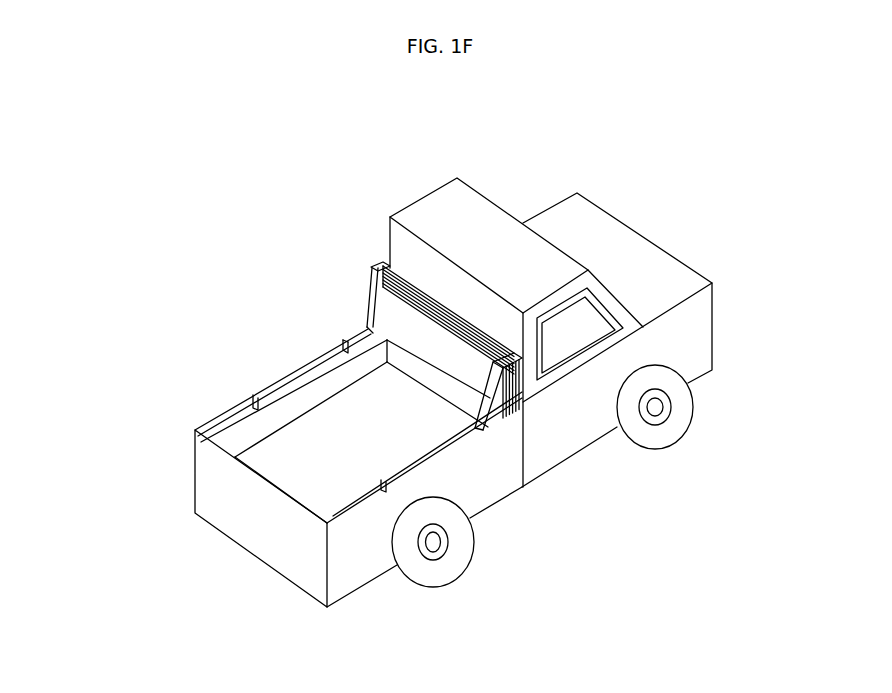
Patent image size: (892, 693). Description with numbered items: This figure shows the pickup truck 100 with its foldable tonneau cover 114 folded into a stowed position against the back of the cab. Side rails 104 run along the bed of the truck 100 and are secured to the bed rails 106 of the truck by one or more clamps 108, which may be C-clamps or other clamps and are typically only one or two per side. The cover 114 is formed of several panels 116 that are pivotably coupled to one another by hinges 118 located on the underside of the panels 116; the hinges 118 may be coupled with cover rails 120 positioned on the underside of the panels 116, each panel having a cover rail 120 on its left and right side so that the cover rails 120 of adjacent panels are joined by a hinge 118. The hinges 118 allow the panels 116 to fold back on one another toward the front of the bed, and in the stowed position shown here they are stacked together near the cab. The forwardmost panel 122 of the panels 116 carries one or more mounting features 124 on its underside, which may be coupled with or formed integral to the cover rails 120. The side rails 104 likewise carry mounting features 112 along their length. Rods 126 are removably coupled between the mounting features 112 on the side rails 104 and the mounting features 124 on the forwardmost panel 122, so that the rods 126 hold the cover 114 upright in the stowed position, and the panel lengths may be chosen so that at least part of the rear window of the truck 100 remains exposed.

The pickup truck 100 is at (577, 227).
The side rails 104 is at (218, 413).
The bed rails 106 is at (347, 513).
The clamps 108 is at (252, 392).
The mounting features 112 is at (341, 343).
The cover 114 is at (377, 257).
The panels 116 is at (527, 397).
The hinges 118 is at (390, 265).
The cover rails 120 is at (507, 415).
The forwardmost panel 122 is at (418, 358).
The mounting features 124 is at (377, 280).
The rods 126 is at (347, 340).